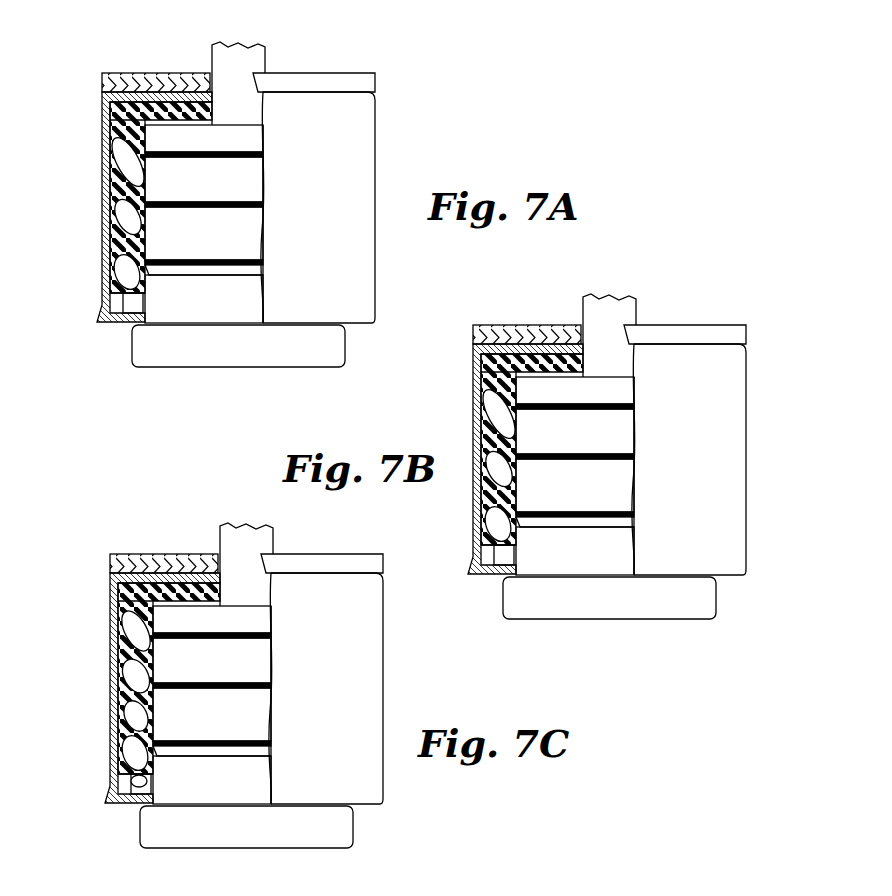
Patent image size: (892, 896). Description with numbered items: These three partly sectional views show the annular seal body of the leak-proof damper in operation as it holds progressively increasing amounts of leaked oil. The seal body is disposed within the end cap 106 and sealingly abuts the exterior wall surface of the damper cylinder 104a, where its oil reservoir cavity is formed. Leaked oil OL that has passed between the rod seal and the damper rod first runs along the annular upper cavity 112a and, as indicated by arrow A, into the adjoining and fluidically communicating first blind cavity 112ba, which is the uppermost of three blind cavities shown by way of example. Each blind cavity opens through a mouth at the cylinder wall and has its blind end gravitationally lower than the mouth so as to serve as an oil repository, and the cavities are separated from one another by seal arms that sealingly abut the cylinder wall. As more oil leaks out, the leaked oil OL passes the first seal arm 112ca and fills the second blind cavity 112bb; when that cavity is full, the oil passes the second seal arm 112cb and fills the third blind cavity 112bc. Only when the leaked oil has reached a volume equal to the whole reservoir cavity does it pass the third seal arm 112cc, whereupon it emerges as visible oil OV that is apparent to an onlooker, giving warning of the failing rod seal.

In FIG. 7A, the end cap 106 is at (375, 148).
In FIG. 7B, the end cap 106 is at (699, 428).
In FIG. 7C, the end cap 106 is at (367, 688).
In FIG. 7A, the damper cylinder 104a is at (265, 220).
In FIG. 7B, the damper cylinder 104a is at (676, 476).
In FIG. 7C, the damper cylinder 104a is at (311, 705).
In FIG. 7A, the upper cavity 112a is at (157, 118).
In FIG. 7B, the upper cavity 112a is at (532, 409).
In FIG. 7C, the upper cavity 112a is at (169, 643).
In FIG. 7A, the arrow A is at (178, 118).
In FIG. 7B, the arrow A is at (523, 318).
In FIG. 7C, the arrow A is at (158, 551).
In FIG. 7A, the leaked oil OL is at (118, 173).
In FIG. 7B, the leaked oil OL is at (479, 465).
In FIG. 7C, the leaked oil OL is at (111, 688).
In FIG. 7C, the visible oil OV is at (102, 811).
In FIG. 7A, the first blind cavity 112ba is at (135, 152).
In FIG. 7B, the first blind cavity 112ba is at (570, 390).
In FIG. 7C, the first blind cavity 112ba is at (207, 619).
In FIG. 7A, the first seal arm 112ca is at (143, 172).
In FIG. 7B, the first seal arm 112ca is at (574, 414).
In FIG. 7C, the first seal arm 112ca is at (211, 646).
In FIG. 7A, the second blind cavity 112bb is at (135, 198).
In FIG. 7B, the second blind cavity 112bb is at (570, 431).
In FIG. 7C, the second blind cavity 112bb is at (207, 660).
In FIG. 7A, the second seal arm 112cb is at (147, 226).
In FIG. 7B, the second seal arm 112cb is at (575, 469).
In FIG. 7C, the second seal arm 112cb is at (212, 699).
In FIG. 7A, the third blind cavity 112bc is at (133, 262).
In FIG. 7B, the third blind cavity 112bc is at (569, 486).
In FIG. 7C, the third blind cavity 112bc is at (206, 715).
In FIG. 7A, the third seal arm 112cc is at (147, 277).
In FIG. 7B, the third seal arm 112cc is at (575, 543).
In FIG. 7C, the third seal arm 112cc is at (212, 772).